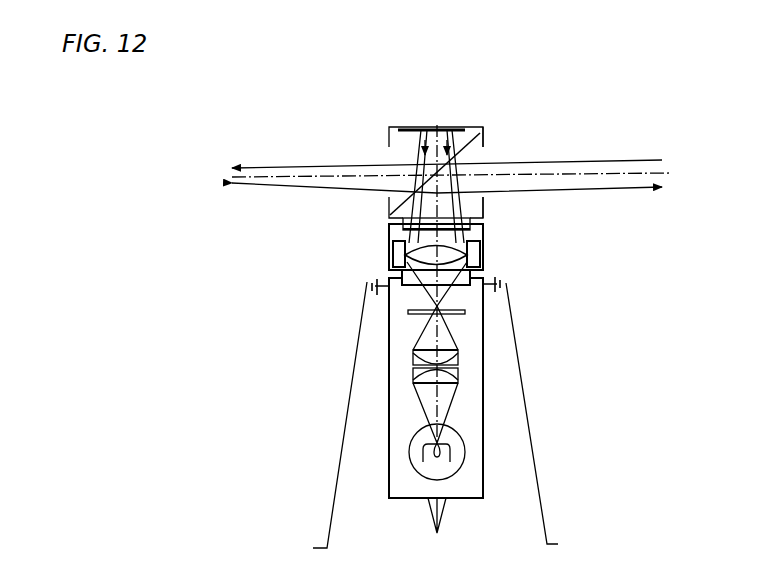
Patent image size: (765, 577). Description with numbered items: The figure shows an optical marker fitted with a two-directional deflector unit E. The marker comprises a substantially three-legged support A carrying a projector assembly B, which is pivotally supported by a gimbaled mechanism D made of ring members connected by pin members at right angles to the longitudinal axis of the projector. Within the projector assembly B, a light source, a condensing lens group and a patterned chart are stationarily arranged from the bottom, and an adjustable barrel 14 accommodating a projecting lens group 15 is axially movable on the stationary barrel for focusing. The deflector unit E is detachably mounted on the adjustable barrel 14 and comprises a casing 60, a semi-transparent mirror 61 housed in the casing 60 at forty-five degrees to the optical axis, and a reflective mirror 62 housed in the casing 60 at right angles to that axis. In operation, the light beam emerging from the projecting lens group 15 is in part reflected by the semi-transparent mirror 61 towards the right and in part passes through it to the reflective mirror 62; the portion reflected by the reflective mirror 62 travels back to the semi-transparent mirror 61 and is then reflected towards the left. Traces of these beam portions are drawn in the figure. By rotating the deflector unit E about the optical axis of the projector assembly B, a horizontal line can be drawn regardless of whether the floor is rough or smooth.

The deflector unit E is at (377, 152).
The casing 60 is at (483, 130).
The semi-transparent mirror 61 is at (447, 168).
The reflective mirror 62 is at (412, 130).
The adjustable barrel 14 is at (389, 232).
The projecting lens group 15 is at (450, 253).
The projector assembly B is at (387, 440).
The gimbaled mechanism D is at (368, 277).
The three-legged support A is at (337, 420).